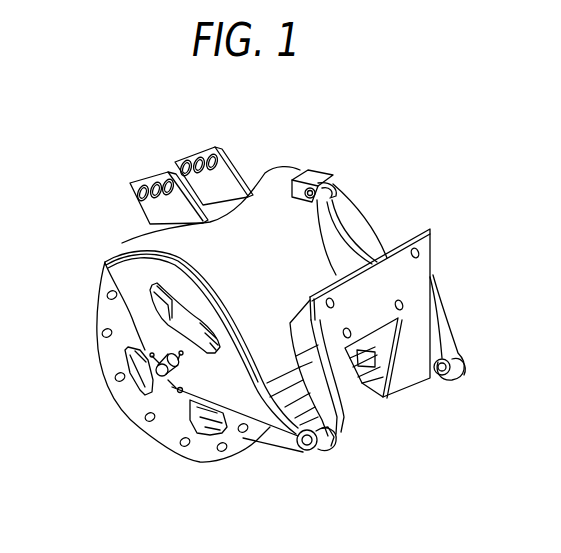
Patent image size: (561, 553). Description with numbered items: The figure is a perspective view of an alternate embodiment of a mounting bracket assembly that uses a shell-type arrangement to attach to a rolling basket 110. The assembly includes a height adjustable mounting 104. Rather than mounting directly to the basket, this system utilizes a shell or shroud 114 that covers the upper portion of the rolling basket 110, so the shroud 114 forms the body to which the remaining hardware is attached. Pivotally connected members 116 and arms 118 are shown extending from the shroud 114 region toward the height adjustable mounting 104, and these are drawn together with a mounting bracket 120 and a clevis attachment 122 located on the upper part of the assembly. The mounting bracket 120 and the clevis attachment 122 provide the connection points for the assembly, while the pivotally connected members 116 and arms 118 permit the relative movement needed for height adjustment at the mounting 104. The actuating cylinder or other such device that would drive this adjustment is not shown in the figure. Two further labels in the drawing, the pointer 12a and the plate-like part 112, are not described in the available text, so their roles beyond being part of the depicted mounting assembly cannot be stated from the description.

The motor assembly 12a is at (312, 157).
The height adjustable mounting 104 is at (343, 447).
The rolling basket 110 is at (160, 447).
The mounting plate 112 is at (408, 278).
The shell or shroud 114 is at (157, 242).
The pivotally connected members 116 is at (317, 385).
The arms 118 is at (273, 422).
The mounting bracket 120 is at (226, 180).
The clevis attachment 122 is at (335, 183).